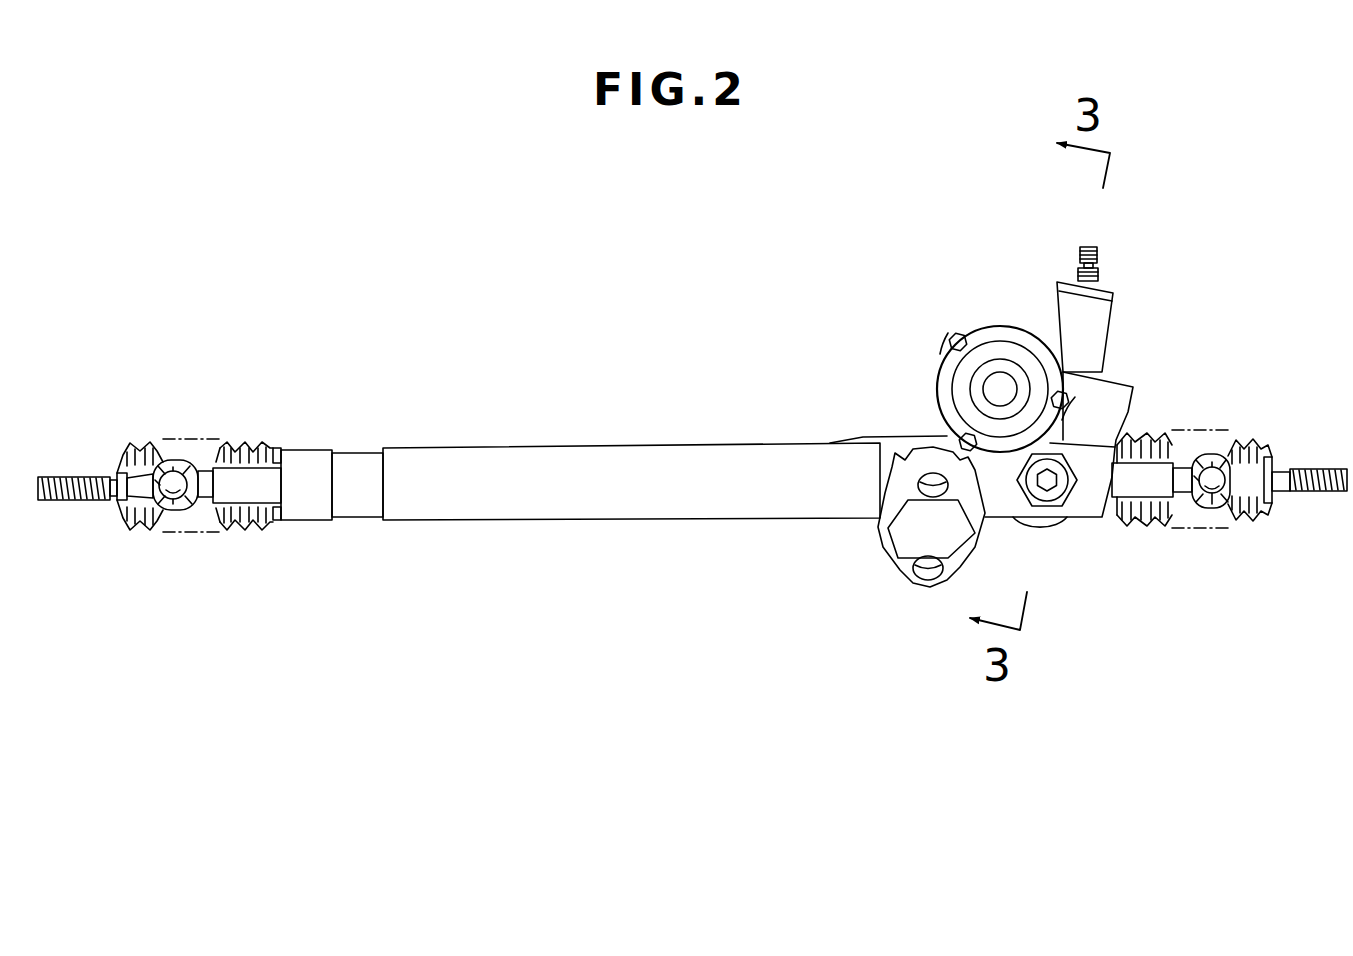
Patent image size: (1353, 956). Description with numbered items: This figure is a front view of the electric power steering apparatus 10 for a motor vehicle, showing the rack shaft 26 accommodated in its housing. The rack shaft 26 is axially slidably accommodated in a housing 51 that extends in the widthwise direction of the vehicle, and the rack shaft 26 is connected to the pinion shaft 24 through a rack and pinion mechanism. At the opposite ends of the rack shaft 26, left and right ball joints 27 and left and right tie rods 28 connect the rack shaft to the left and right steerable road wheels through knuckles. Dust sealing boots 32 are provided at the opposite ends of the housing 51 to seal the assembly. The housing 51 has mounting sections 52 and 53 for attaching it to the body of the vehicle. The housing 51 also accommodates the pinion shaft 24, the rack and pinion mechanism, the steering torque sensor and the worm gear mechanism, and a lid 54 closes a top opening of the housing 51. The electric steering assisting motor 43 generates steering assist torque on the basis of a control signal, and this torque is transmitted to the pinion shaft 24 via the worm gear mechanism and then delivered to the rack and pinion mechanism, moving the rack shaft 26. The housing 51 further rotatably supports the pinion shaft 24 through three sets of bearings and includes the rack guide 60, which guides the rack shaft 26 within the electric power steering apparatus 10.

The electric power steering apparatus 10 is at (290, 193).
The pinion shaft 24 is at (1100, 262).
The rack shaft 26 is at (250, 438).
The ball joints 27 is at (175, 500).
The tie rods 28 is at (75, 500).
The dust sealing boots 32 is at (240, 535).
The electric steering assisting motor 43 is at (960, 370).
The housing 51 is at (603, 430).
The mounting section 52 is at (905, 560).
The mounting section 53 is at (358, 522).
The lid 54 is at (1103, 320).
The rack guide 60 is at (1050, 500).